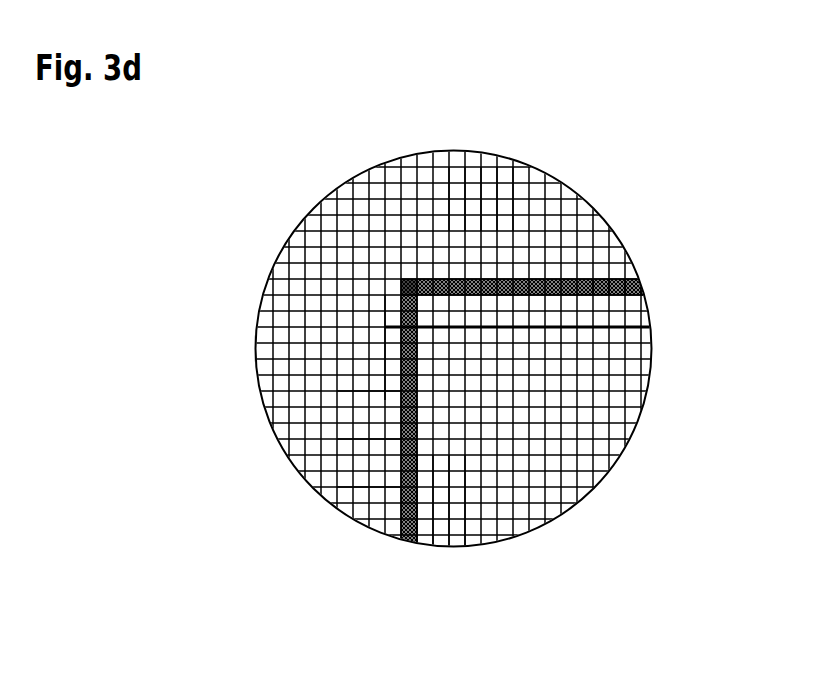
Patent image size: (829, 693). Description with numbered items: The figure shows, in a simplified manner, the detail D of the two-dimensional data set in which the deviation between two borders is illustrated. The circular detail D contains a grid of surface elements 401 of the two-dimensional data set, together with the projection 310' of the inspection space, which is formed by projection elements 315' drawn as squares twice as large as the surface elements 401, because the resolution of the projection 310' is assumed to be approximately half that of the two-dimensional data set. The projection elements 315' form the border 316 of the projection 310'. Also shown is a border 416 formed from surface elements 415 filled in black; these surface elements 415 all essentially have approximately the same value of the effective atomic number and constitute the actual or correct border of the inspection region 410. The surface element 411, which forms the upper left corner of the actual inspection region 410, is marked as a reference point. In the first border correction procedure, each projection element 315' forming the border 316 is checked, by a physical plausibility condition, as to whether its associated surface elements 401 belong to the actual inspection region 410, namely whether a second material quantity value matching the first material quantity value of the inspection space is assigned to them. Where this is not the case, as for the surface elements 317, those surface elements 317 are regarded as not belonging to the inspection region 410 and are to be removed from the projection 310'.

The detail D is at (312, 222).
The projection of the inspection space 310' is at (486, 350).
The surface element 411 is at (398, 277).
The border 416 is at (550, 278).
The inspection region 410 is at (578, 320).
The surface elements 401 is at (508, 223).
The surface elements 415 is at (600, 278).
The border 316 is at (392, 350).
The projection elements 315' is at (319, 462).
The surface elements 317 is at (463, 478).